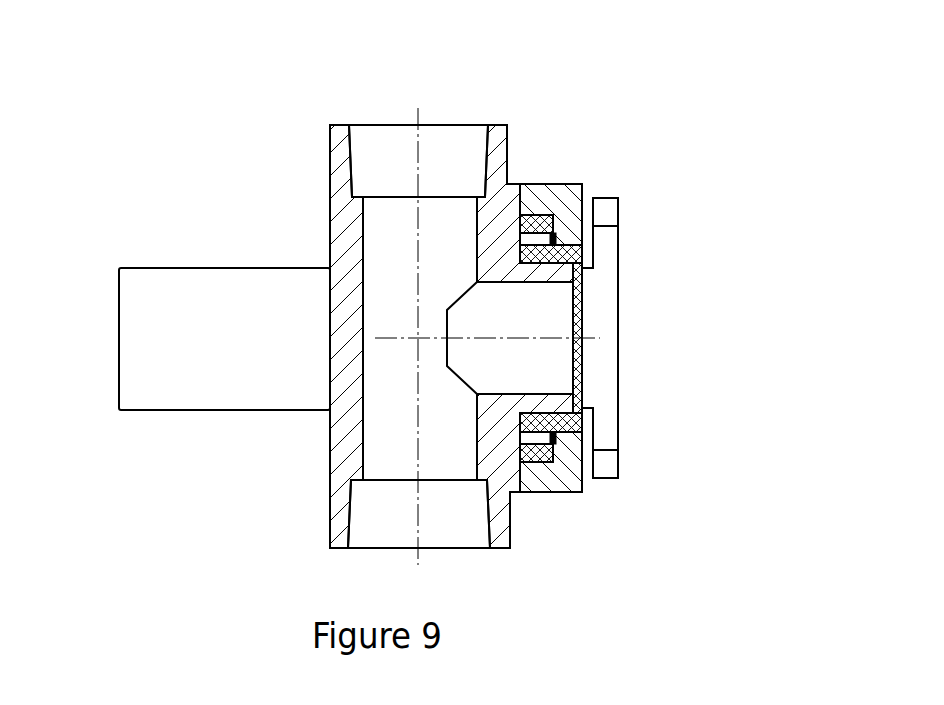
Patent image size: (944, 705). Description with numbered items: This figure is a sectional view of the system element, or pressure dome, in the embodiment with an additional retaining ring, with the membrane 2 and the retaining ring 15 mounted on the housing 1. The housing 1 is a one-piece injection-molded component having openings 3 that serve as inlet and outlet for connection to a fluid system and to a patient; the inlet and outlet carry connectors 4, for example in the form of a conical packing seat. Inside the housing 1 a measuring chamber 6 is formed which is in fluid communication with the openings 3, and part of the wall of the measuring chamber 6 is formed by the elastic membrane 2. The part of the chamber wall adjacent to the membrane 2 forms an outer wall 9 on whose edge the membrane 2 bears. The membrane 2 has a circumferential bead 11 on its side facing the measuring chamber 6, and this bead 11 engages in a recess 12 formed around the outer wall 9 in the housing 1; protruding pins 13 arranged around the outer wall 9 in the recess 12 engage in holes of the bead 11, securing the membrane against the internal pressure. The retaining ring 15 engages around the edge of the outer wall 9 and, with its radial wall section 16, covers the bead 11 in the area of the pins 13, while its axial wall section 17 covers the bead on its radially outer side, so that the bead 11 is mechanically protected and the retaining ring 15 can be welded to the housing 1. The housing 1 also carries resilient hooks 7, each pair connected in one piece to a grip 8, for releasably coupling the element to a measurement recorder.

The housing 1 is at (249, 193).
The membrane 2 is at (580, 296).
The openings 3 is at (375, 130).
The connectors 4 is at (443, 157).
The measuring chamber 6 is at (555, 322).
The hooks 7 is at (618, 203).
The grip 8 is at (135, 320).
The outer wall 9 is at (545, 282).
The circumferential bead 11 is at (522, 210).
The recess 12 is at (513, 178).
The pins 13 is at (582, 242).
The retaining ring 15 is at (556, 236).
The radial wall section 16 is at (575, 440).
The axial wall section 17 is at (540, 478).